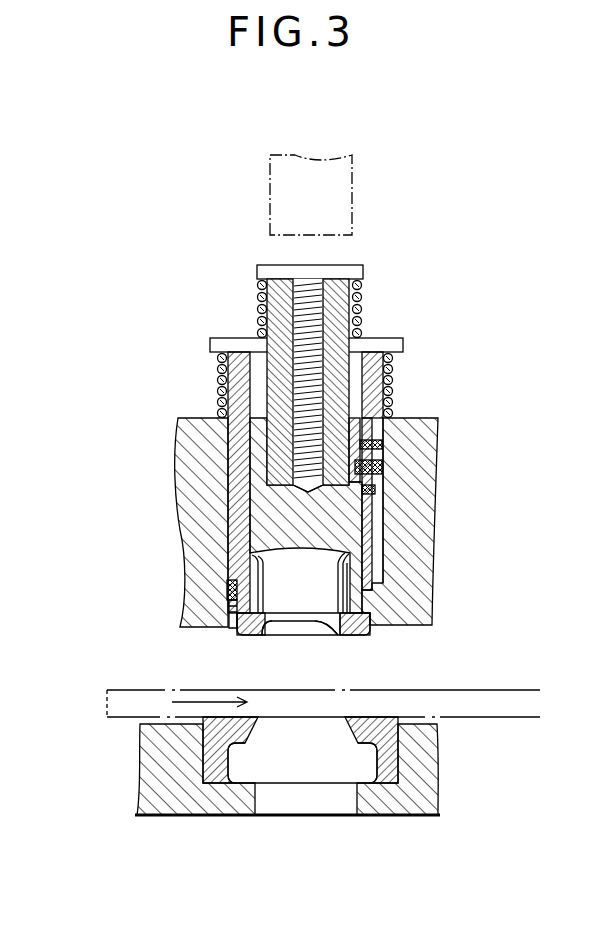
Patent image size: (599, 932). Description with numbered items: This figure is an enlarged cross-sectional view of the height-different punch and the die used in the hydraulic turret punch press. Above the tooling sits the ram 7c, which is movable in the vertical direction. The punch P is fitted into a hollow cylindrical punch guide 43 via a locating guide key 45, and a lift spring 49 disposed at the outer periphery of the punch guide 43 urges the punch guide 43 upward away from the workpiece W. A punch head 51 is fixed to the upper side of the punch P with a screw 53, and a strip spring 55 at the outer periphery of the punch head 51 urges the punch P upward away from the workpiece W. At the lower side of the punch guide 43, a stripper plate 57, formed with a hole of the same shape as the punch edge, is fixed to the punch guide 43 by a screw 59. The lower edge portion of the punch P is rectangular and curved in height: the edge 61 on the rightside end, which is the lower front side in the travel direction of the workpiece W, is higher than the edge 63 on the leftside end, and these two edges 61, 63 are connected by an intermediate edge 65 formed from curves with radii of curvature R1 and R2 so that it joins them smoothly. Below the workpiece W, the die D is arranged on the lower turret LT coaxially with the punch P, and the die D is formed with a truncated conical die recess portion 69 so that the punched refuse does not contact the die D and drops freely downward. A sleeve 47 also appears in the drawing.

The ram 7c is at (352, 186).
The punch head 51 is at (262, 267).
The screw 53 is at (293, 300).
The strip spring 55 is at (262, 312).
The lift spring 49 is at (218, 372).
The guide sleeve 47 is at (383, 445).
The locating guide key 45 is at (383, 468).
The punch guide 43 is at (383, 518).
The punch P is at (340, 574).
The screw 59 is at (232, 605).
The stripper plate 57 is at (370, 632).
The leftside end edge 63 is at (266, 636).
The intermediate edge 65 is at (312, 630).
The rightside end edge 61 is at (340, 631).
The radius of curvature R1 is at (308, 630).
The radius of curvature R2 is at (327, 641).
The workpiece W is at (147, 690).
The die D is at (393, 750).
The lower turret LT is at (430, 800).
The die recess portion 69 is at (268, 742).